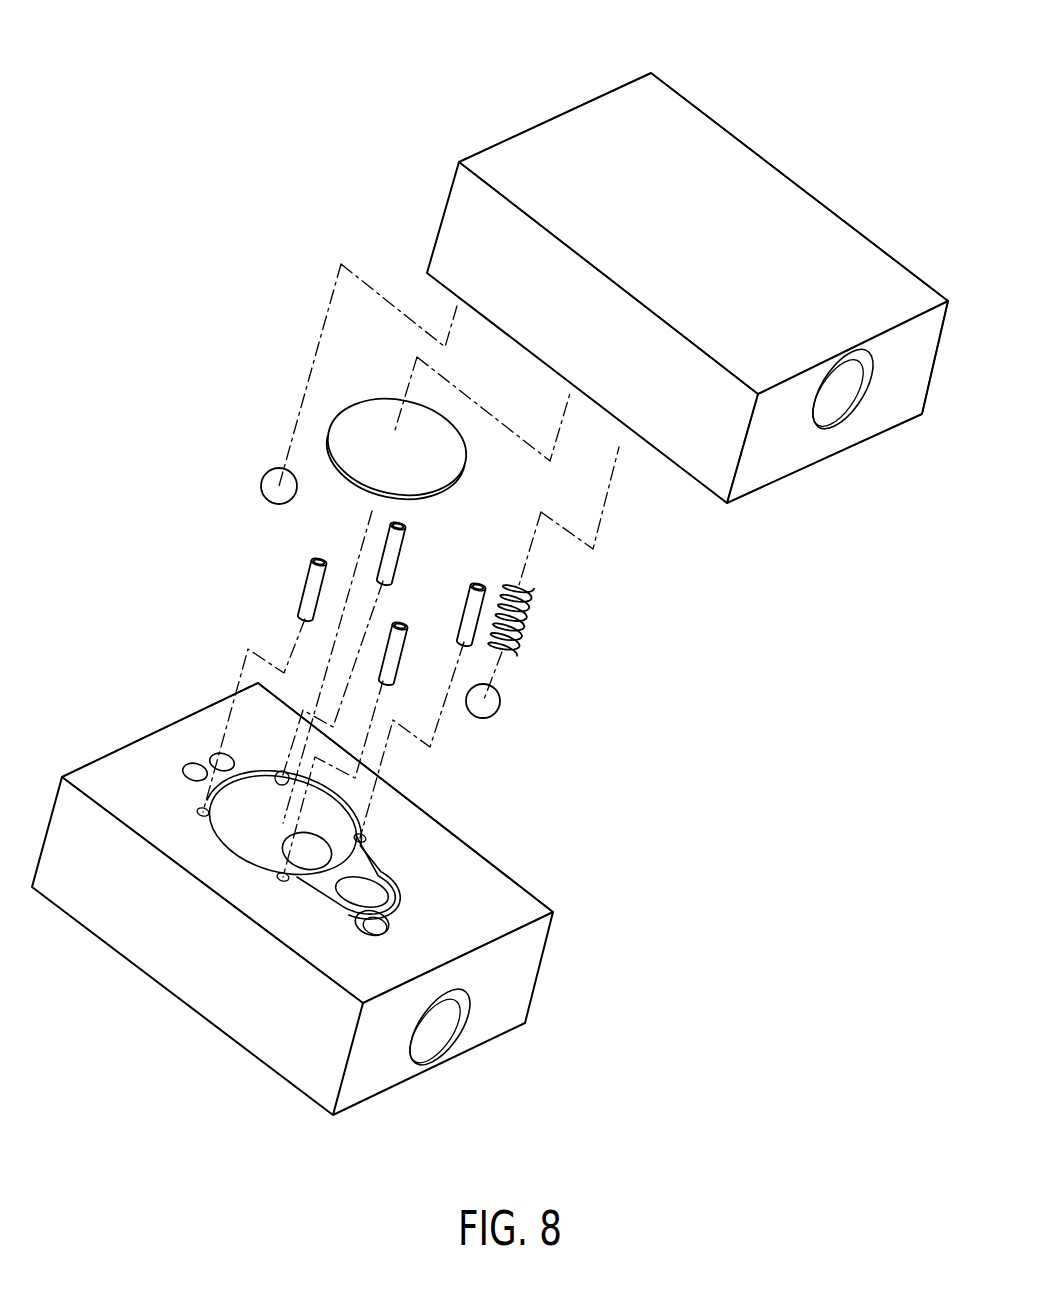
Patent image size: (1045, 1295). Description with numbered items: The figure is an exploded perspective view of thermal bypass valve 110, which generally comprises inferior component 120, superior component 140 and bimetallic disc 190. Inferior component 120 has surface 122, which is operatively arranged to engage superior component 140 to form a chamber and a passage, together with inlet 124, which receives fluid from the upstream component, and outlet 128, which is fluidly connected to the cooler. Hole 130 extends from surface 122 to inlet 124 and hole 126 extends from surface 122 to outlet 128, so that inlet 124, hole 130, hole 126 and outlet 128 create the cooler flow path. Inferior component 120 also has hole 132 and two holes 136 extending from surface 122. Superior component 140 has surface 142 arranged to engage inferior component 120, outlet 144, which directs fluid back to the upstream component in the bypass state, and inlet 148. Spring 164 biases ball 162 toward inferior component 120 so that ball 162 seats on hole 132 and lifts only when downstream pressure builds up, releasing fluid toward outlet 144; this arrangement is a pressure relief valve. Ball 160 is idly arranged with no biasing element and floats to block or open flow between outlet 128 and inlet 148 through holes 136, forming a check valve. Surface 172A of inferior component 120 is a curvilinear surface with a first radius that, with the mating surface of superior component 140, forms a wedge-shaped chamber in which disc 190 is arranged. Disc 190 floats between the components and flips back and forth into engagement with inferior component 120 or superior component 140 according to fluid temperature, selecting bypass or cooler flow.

The thermal bypass valve 110 is at (277, 88).
The inlet 148 is at (495, 120).
The superior component 140 is at (719, 142).
The surface 142 is at (702, 490).
The outlet 144 is at (844, 400).
The bimetallic disc 190 is at (455, 468).
The ball 160 is at (280, 478).
The spring 164 is at (531, 626).
The ball 162 is at (500, 710).
The outlet 128 is at (145, 730).
The inferior component 120 is at (150, 948).
The surface 122 is at (83, 775).
The inlet 124 is at (428, 1045).
The hole 136 is at (190, 762).
The surface 172A is at (233, 822).
The hole 126 is at (282, 848).
The hole 130 is at (370, 882).
The hole 132 is at (385, 924).